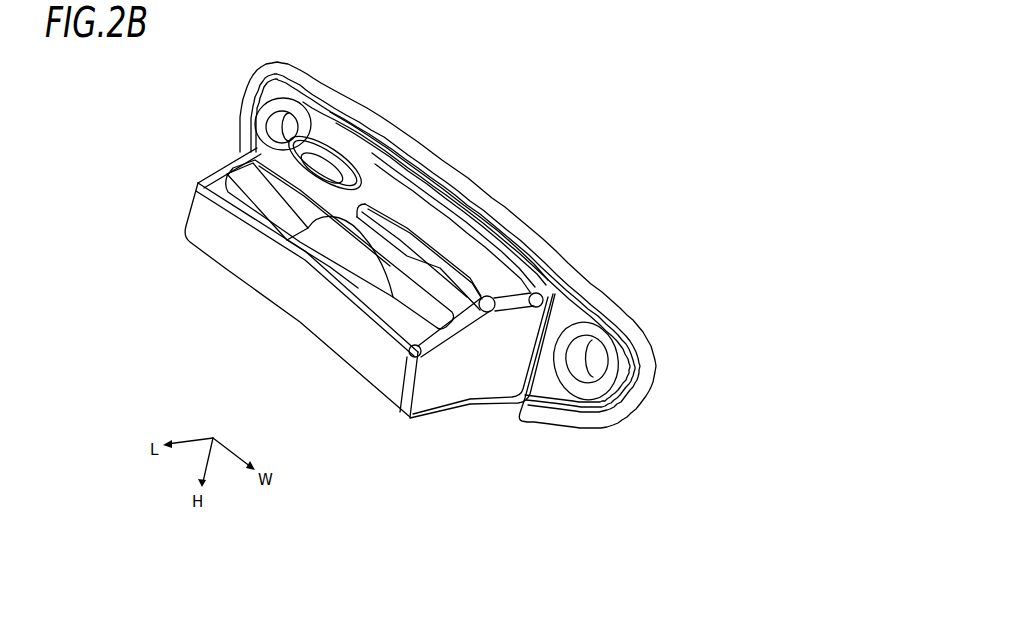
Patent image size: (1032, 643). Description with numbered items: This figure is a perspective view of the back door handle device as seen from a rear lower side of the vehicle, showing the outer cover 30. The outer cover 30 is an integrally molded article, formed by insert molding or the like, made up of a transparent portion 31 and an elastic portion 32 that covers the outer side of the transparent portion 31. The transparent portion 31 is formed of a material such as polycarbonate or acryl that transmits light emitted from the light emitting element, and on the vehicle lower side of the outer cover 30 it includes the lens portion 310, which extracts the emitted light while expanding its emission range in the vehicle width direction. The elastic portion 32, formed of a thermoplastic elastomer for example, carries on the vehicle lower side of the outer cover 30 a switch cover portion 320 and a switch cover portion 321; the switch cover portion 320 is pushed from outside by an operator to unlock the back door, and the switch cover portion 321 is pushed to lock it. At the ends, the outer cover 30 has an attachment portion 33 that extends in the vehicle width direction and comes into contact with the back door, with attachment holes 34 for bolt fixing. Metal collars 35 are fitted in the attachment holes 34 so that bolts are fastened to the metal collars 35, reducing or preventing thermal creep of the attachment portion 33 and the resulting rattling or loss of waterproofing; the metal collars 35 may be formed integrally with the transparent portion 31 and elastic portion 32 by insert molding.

The outer cover 30 is at (505, 322).
The transparent portion 31 is at (293, 331).
The lens portion 310 is at (332, 253).
The elastic portion 32 is at (559, 275).
The switch cover portion 320 is at (452, 250).
The switch cover portion 321 is at (330, 168).
The attachment portion 33 is at (597, 407).
The attachment holes 34 is at (596, 370).
The metal collars 35 is at (597, 345).